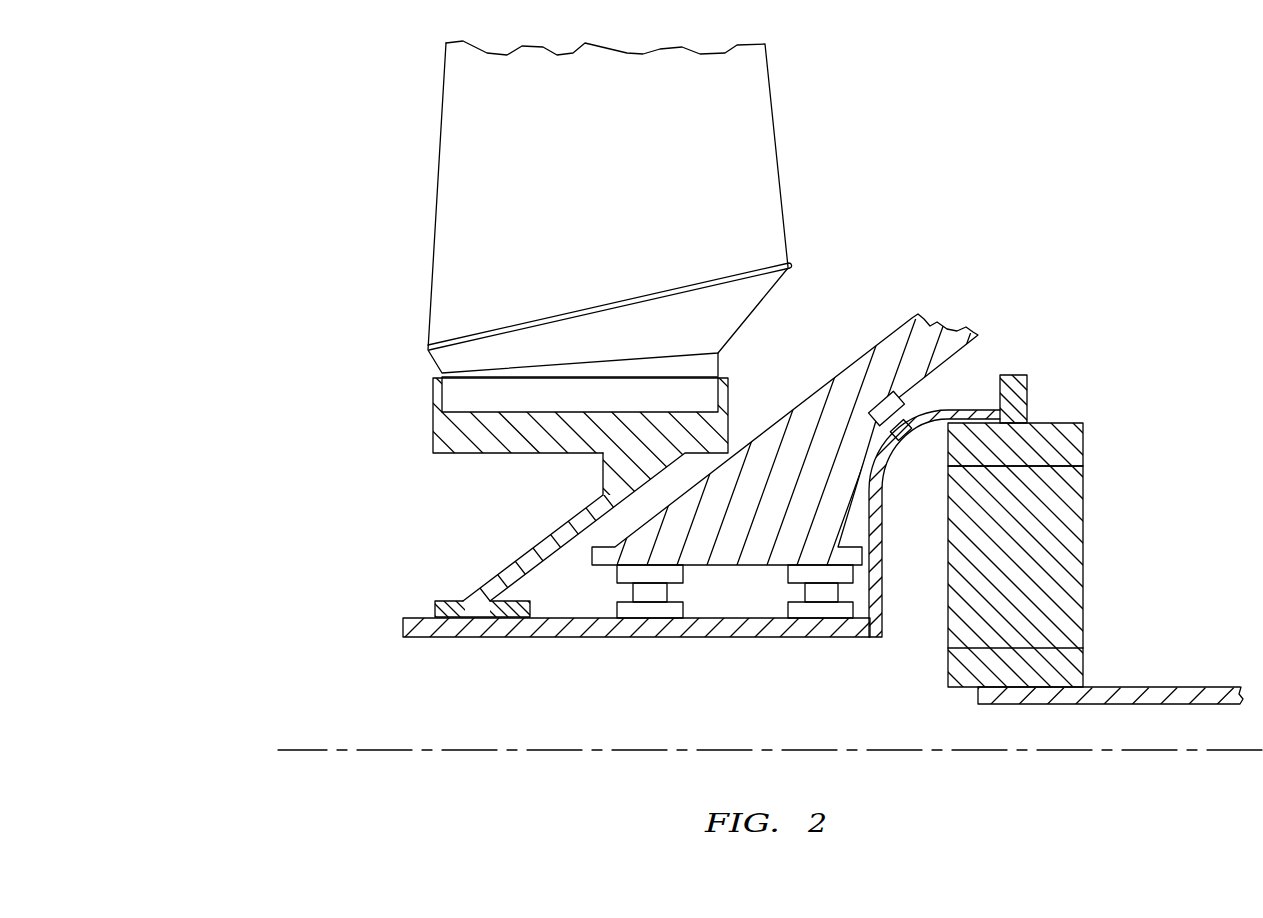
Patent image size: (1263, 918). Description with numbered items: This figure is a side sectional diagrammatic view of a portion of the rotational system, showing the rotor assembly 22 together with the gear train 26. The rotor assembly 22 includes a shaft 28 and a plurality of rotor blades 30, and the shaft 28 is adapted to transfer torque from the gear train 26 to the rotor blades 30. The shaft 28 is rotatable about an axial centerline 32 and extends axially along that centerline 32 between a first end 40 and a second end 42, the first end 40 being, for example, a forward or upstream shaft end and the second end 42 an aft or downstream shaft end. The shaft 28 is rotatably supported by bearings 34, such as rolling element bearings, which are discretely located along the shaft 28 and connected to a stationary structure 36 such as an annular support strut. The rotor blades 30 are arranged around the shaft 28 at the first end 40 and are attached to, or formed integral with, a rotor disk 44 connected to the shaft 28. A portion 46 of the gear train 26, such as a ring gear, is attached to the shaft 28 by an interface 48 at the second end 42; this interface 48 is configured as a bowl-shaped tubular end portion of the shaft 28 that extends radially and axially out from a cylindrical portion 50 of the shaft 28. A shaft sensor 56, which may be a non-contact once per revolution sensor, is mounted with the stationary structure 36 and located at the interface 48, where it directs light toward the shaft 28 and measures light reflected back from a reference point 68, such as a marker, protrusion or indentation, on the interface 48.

The rotor assembly 22 is at (371, 631).
The gear train 26 is at (1092, 524).
The shaft 28 is at (548, 650).
The rotor blades 30 is at (621, 149).
The axial centerline 32 is at (308, 752).
The bearings 34 is at (771, 598).
The stationary structure 36 is at (928, 325).
The first end 40 is at (402, 632).
The second end 42 is at (1010, 375).
The rotor disk 44 is at (555, 531).
The portion of the gear train 46 is at (1068, 436).
The interface 48 is at (880, 532).
The cylindrical portion 50 is at (606, 640).
The shaft sensor 56 is at (882, 405).
The reference point 68 is at (906, 419).